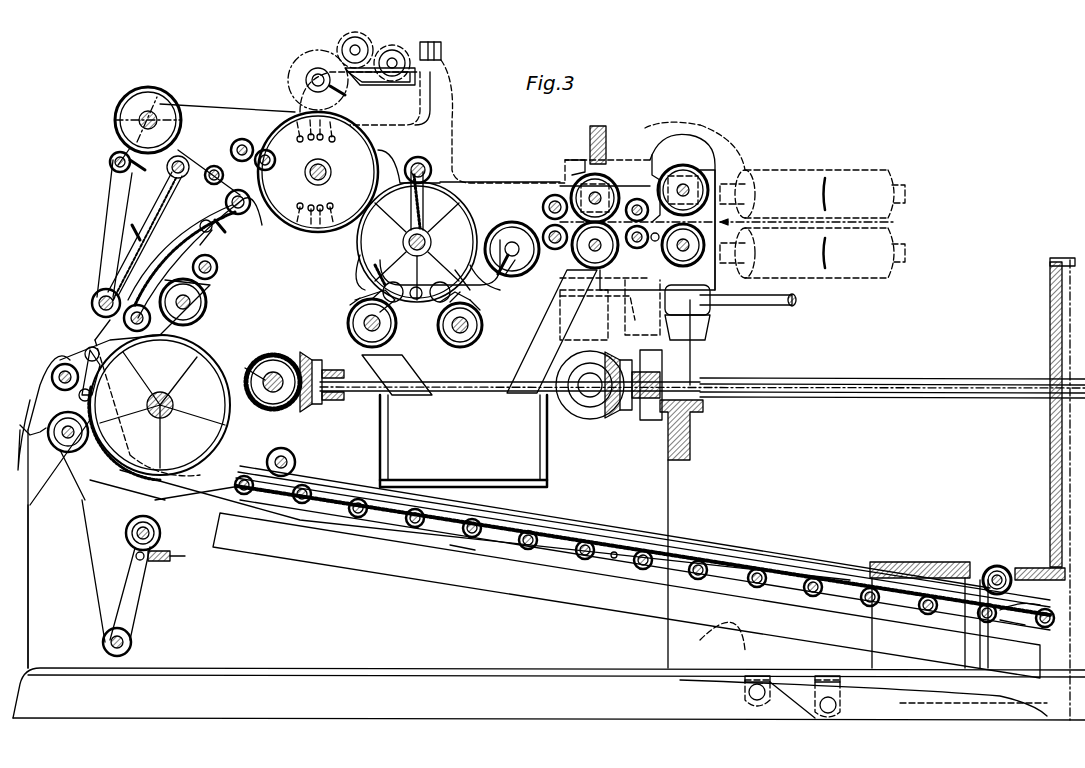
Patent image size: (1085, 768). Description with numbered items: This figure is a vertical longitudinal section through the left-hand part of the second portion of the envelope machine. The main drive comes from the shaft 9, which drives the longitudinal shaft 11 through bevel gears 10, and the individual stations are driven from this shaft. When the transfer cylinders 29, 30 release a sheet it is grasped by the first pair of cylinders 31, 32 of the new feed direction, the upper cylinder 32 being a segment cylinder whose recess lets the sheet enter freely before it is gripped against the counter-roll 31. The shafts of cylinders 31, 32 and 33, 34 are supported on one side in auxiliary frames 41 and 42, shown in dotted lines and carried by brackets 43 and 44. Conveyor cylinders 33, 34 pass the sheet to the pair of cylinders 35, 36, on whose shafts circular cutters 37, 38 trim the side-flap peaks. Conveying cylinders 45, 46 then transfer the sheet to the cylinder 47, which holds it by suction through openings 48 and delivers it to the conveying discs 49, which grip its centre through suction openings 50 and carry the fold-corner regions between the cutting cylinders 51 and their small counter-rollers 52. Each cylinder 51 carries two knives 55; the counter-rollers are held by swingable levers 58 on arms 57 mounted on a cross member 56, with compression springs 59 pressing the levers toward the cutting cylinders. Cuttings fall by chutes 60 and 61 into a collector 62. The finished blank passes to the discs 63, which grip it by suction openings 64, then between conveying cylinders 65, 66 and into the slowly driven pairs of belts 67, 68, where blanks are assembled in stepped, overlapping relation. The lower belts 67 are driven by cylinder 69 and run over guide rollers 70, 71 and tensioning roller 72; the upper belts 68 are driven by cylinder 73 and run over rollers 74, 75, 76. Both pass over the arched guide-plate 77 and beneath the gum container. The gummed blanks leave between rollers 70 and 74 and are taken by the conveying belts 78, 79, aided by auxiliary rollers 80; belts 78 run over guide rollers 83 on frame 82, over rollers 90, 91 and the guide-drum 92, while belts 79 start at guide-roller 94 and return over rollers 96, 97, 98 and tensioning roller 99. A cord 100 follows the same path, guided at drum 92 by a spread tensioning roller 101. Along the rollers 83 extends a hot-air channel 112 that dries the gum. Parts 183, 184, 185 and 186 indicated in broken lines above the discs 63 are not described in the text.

The shaft 9 is at (251, 366).
The bevel gear 10 is at (273, 365).
The longitudinal shaft 11 is at (372, 392).
The transfer cylinder 29 is at (838, 278).
The transfer cylinder 30 is at (836, 172).
The counter-roll 31 is at (672, 262).
The segment cylinder 32 is at (695, 170).
The conveyor cylinder 33 is at (638, 249).
The conveyor cylinder 34 is at (655, 162).
The cylinder 35 is at (560, 290).
The cylinder 36 is at (588, 174).
The circular cutter 37 is at (575, 262).
The circular cutter 38 is at (572, 176).
The auxiliary frame 41 is at (665, 128).
The auxiliary frame 42 is at (640, 285).
The bracket 43 is at (597, 136).
The bracket 44 is at (608, 320).
The conveying cylinder 45 is at (553, 250).
The conveying cylinder 46 is at (553, 195).
The cylinder 47 is at (513, 222).
The openings 48 is at (515, 278).
The conveying discs 49 is at (462, 220).
The suction openings 50 is at (378, 188).
The cylinder 51 is at (484, 330).
The counter-roller 52 is at (470, 298).
The knives 55 is at (360, 300).
The cross member 56 is at (423, 165).
The arms 57 is at (413, 190).
The swingable lever 58 is at (436, 300).
The compression spring 59 is at (452, 268).
The chute 60 is at (410, 368).
The chute 61 is at (520, 380).
The collector 62 is at (380, 436).
The discs 63 is at (365, 142).
The suction openings 64 is at (295, 120).
The conveying cylinder 65 is at (293, 167).
The conveying cylinder 66 is at (242, 140).
The lower belts 67 is at (190, 262).
The upper belts 68 is at (160, 232).
The cylinder 69 is at (206, 305).
The guide roller 70 is at (124, 322).
The guide roller 71 is at (245, 210).
The tensioning roller 72 is at (216, 272).
The cylinder 73 is at (133, 110).
The roller 74 is at (91, 306).
The roller 75 is at (210, 170).
The roller 76 is at (110, 165).
The arched guide-plate 77 is at (212, 222).
The conveying belt 78 is at (242, 480).
The conveying belt 79 is at (668, 572).
The auxiliary rollers 80 is at (96, 382).
The frame 82 is at (610, 545).
The guide rollers 83 is at (585, 545).
The guide or tensioning roller 90 is at (998, 568).
The guide or tensioning roller 91 is at (293, 465).
The guide-drum 92 is at (230, 410).
The guide-roller 94 is at (63, 448).
The roller 96 is at (840, 710).
The roller 97 is at (750, 700).
The roller 98 is at (131, 640).
The tensioning roller 99 is at (128, 530).
The cord 100 is at (90, 551).
The spread tensioning roller 101 is at (58, 368).
The channel 112 is at (605, 612).
The bracket 183 is at (380, 86).
The roller 184 is at (392, 47).
The roller 185 is at (355, 34).
The disc 186 is at (325, 60).